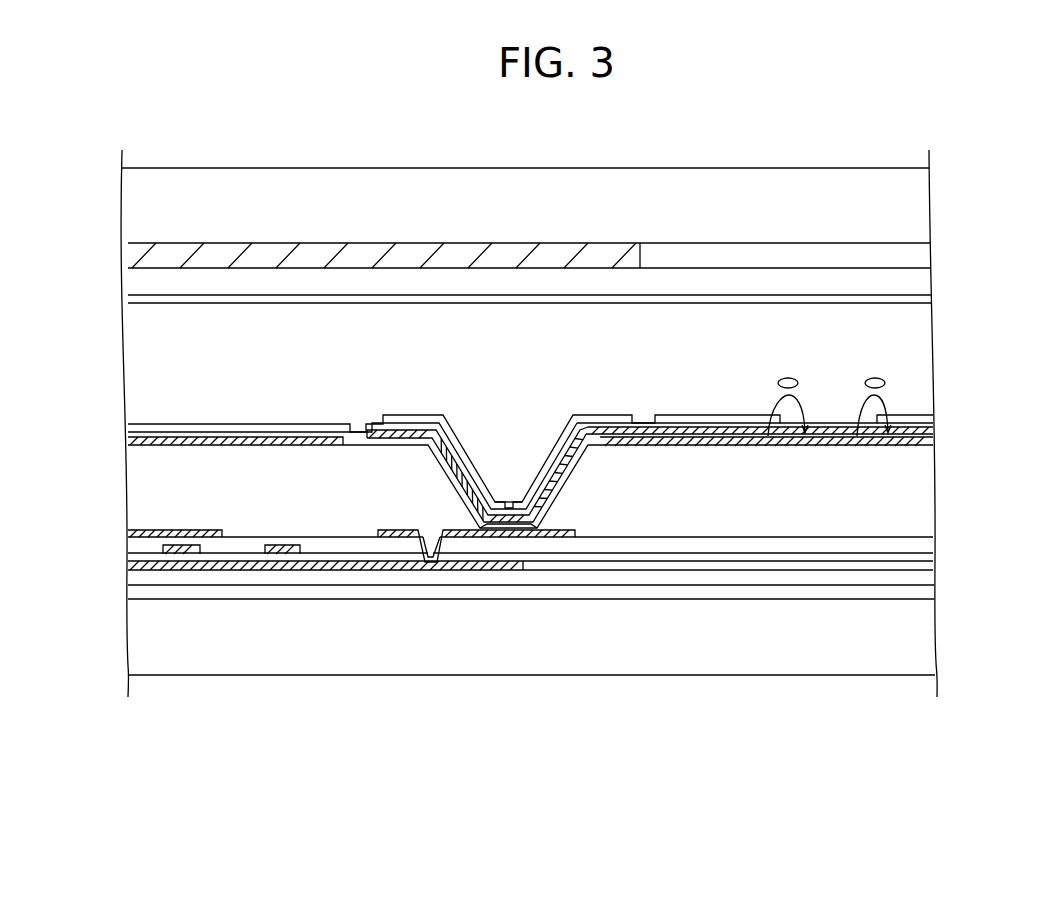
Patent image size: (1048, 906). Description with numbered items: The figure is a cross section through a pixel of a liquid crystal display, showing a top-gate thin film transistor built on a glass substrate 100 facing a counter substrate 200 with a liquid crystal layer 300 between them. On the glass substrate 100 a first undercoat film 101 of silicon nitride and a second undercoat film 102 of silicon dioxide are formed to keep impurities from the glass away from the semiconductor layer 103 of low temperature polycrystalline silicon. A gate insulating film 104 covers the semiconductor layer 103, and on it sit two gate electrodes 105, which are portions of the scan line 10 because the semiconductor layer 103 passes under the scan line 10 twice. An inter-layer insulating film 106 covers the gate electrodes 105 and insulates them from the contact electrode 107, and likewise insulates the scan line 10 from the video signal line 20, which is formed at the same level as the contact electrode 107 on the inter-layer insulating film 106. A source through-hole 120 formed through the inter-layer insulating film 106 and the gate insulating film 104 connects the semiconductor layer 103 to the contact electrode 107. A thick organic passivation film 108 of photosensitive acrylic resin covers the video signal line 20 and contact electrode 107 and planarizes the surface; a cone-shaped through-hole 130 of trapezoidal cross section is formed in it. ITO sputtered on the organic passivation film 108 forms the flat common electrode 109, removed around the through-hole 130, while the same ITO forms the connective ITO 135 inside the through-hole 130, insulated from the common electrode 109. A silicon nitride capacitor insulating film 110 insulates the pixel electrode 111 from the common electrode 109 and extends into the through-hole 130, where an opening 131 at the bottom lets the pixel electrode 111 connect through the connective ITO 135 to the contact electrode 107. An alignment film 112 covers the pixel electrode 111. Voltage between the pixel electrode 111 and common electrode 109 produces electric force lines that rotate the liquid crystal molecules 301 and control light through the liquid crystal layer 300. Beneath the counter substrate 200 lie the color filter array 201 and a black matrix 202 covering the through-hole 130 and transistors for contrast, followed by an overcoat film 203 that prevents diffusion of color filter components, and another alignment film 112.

The scan line 10 is at (232, 652).
The video signal line 20 is at (165, 529).
The glass substrate 100 is at (915, 638).
The first undercoat film 101 is at (920, 597).
The second undercoat film 102 is at (920, 583).
The semiconductor layer 103 is at (375, 555).
The gate insulating film 104 is at (920, 563).
The gate electrodes 105 is at (273, 554).
The inter-layer insulating film 106 is at (935, 537).
The contact electrode 107 is at (468, 538).
The organic passivation film 108 is at (922, 491).
The common electrode 109 is at (155, 449).
The capacitor insulating film 110 is at (915, 430).
The pixel electrode 111 is at (725, 421).
The alignment film 112 is at (918, 297).
The source through-hole 120 is at (435, 540).
The through-hole 130 is at (507, 440).
The opening 131 is at (547, 520).
The connective ITO 135 is at (573, 487).
The counter substrate 200 is at (905, 207).
The color filter array 201 is at (912, 252).
The black matrix 202 is at (130, 259).
The overcoat film 203 is at (918, 285).
The liquid crystal layer 300 is at (143, 368).
The liquid crystal molecules 301 is at (780, 392).